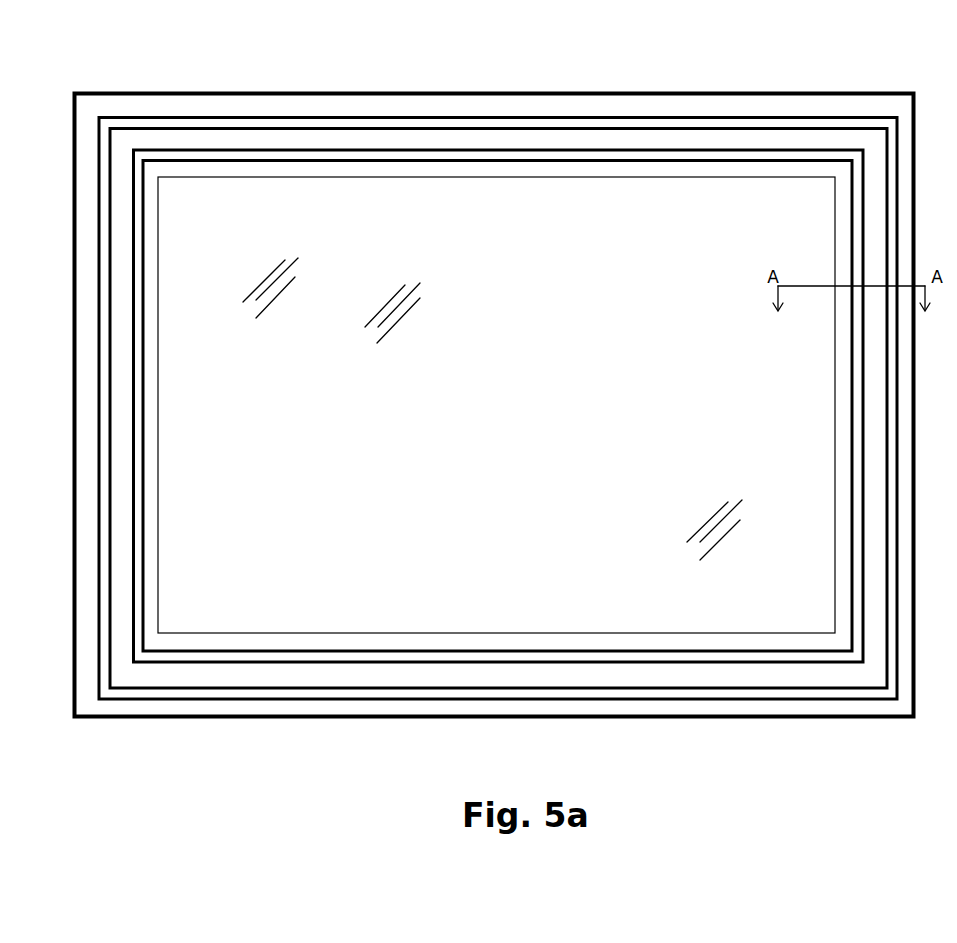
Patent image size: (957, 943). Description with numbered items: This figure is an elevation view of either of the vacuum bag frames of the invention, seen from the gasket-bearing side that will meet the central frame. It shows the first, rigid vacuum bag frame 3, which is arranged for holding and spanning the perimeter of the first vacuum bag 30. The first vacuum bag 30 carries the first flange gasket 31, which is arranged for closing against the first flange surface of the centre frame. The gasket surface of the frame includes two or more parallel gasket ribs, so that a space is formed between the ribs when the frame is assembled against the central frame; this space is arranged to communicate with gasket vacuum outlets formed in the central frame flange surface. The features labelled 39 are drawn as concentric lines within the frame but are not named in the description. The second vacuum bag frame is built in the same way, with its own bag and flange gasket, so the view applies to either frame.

The first rigid vacuum bag frame 3 is at (742, 142).
The first flange gasket 31 is at (239, 138).
The seal / adhesive layer 39 is at (507, 123).
The first vacuum bag 30 is at (393, 276).